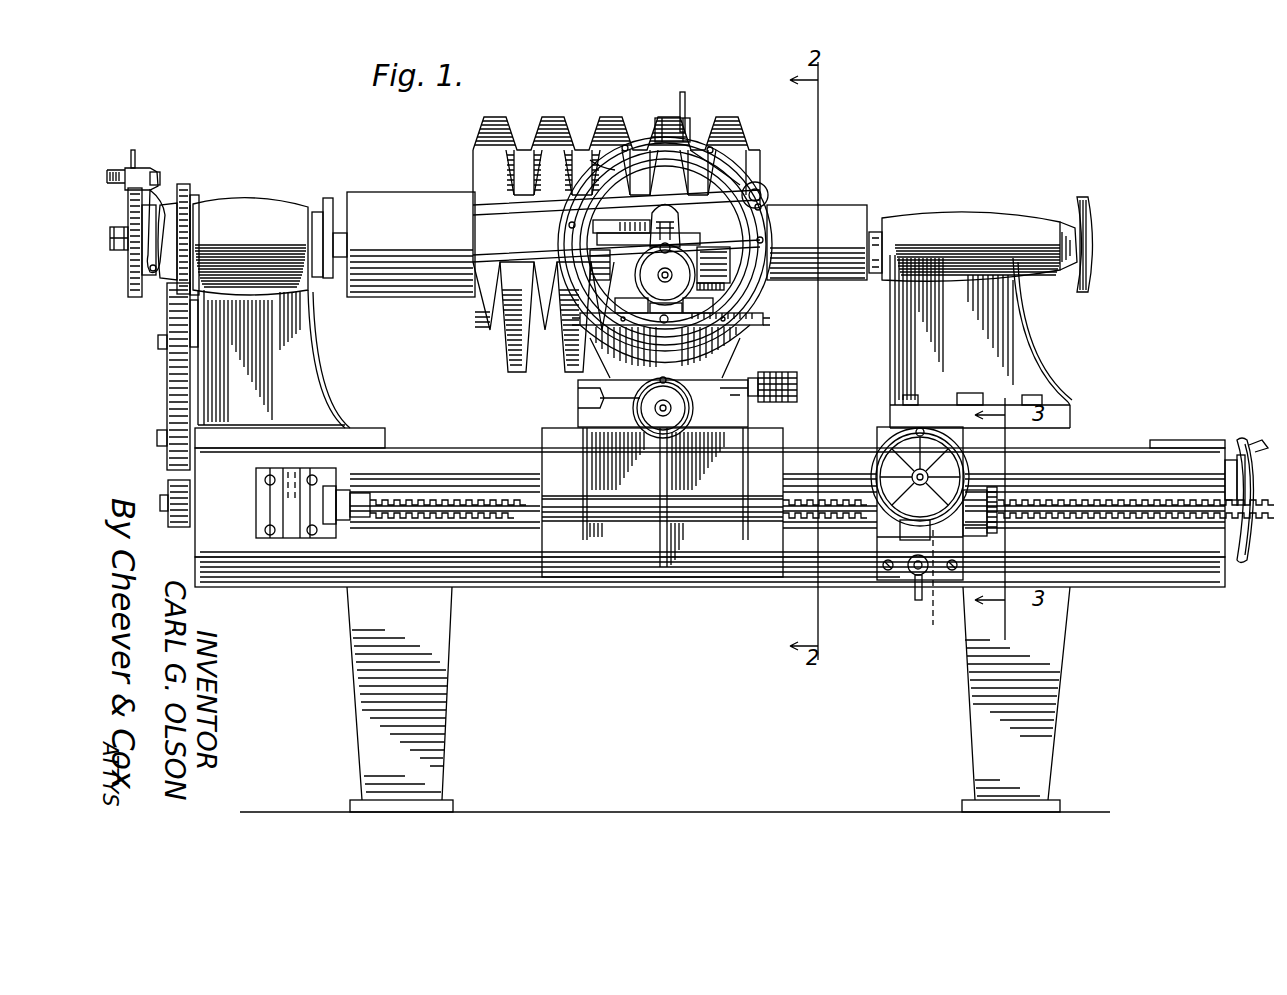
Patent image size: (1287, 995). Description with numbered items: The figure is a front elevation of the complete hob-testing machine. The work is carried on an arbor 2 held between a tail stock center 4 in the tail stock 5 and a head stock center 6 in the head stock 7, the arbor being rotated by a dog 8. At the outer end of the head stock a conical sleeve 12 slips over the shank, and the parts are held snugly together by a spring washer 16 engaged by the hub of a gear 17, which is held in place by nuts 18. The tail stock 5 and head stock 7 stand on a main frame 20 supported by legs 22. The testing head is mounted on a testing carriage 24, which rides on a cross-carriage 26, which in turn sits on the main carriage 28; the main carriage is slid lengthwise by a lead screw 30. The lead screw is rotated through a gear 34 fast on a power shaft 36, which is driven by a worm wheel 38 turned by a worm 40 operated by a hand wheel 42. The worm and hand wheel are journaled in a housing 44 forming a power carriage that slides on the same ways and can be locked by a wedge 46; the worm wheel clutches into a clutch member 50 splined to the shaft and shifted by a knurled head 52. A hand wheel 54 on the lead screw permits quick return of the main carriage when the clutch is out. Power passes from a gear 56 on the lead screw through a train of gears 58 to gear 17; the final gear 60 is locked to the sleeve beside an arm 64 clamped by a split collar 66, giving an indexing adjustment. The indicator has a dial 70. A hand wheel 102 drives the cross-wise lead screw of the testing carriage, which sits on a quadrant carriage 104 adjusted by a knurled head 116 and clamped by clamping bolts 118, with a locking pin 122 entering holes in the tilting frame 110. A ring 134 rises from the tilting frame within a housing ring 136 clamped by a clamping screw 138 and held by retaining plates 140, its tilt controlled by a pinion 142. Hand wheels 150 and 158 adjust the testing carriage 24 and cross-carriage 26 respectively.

The arbor 2 is at (410, 200).
The tail stock center 4 is at (878, 232).
The tail stock 5 is at (990, 215).
The head stock center 6 is at (350, 240).
The head stock 7 is at (270, 210).
The dog 8 is at (337, 198).
The conical sleeve 12 is at (975, 675).
The spring washer 16 is at (150, 215).
The gear 17 is at (135, 298).
The nuts 18 is at (118, 228).
The main frame 20 is at (508, 578).
The legs 22 is at (432, 690).
The testing carriage 24 is at (710, 378).
The cross-carriage 26 is at (600, 388).
The main carriage 28 is at (625, 560).
The lead screw 30 is at (1130, 518).
The gear 34 is at (290, 495).
The power shaft 36 is at (1100, 510).
The worm wheel 38 is at (940, 530).
The worm 40 is at (890, 478).
The hand wheel 42 is at (938, 420).
The housing 44 is at (908, 572).
The wedge 46 is at (931, 581).
The clutch member 50 is at (978, 535).
The knurled head 52 is at (997, 530).
The hand wheel 54 is at (1250, 455).
The gear 56 is at (178, 527).
The train of gears 58 is at (172, 405).
The final gear 60 is at (190, 188).
The arm 64 is at (152, 176).
The split collar 66 is at (152, 282).
The dial 70 is at (575, 150).
The hand wheel 102 is at (680, 268).
The quadrant carriage 104 is at (770, 300).
The tilting frame 110 is at (740, 333).
The knurled head 116 is at (700, 290).
The clamping bolts 118 is at (805, 290).
The locking pin 122 is at (662, 323).
The ring 134 is at (710, 170).
The housing ring 136 is at (648, 130).
The clamping screw 138 is at (685, 130).
The retaining plates 140 is at (608, 160).
The pinion 142 is at (766, 190).
The hand wheel 150 is at (797, 385).
The hand wheel 158 is at (654, 433).